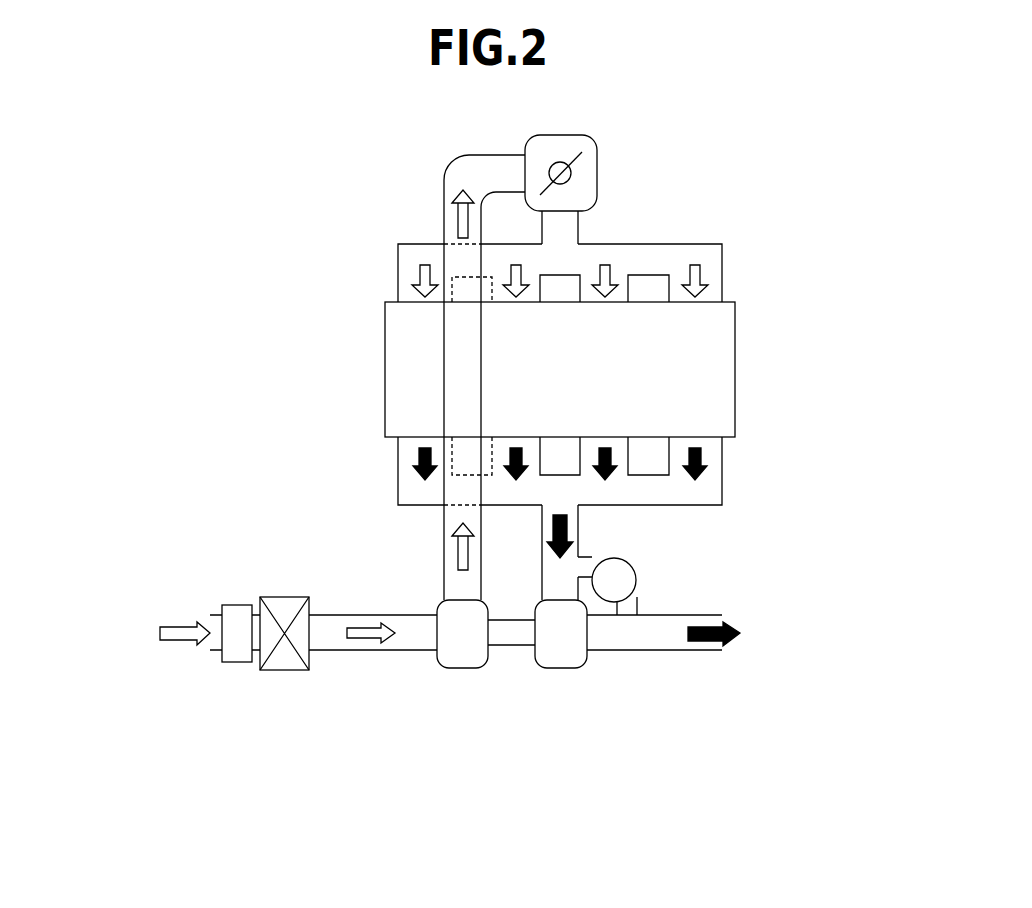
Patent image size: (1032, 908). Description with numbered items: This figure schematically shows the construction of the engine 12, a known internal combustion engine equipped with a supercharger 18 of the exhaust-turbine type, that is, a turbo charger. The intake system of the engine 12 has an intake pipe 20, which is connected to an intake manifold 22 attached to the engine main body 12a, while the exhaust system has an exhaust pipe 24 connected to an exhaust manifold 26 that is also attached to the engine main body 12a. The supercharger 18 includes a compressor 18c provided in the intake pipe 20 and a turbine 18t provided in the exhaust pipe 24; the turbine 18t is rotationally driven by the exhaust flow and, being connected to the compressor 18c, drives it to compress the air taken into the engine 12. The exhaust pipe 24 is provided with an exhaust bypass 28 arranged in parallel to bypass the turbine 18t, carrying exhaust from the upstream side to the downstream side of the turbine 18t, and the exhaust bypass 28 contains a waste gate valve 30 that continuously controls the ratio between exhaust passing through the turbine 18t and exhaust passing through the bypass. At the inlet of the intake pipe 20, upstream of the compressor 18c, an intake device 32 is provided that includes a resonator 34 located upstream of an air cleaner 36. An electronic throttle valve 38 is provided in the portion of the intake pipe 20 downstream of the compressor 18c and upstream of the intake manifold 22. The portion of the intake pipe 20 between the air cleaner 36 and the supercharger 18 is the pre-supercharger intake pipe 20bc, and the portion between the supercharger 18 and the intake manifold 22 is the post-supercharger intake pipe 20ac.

The engine 12 is at (663, 128).
The engine main body 12a is at (717, 354).
The supercharger 18 is at (523, 733).
The compressor 18c is at (460, 657).
The turbine 18t is at (550, 655).
The intake pipe 20 is at (360, 538).
The post-supercharger intake pipe 20ac is at (444, 553).
The pre-supercharger intake pipe 20bc is at (392, 617).
The intake manifold 22 is at (413, 255).
The exhaust pipe 24 is at (547, 562).
The exhaust manifold 26 is at (710, 477).
The exhaust bypass 28 is at (587, 560).
The waste gate valve 30 is at (636, 576).
The intake device 32 is at (263, 676).
The resonator 34 is at (233, 655).
The air cleaner 36 is at (284, 657).
The electronic throttle valve 38 is at (586, 171).